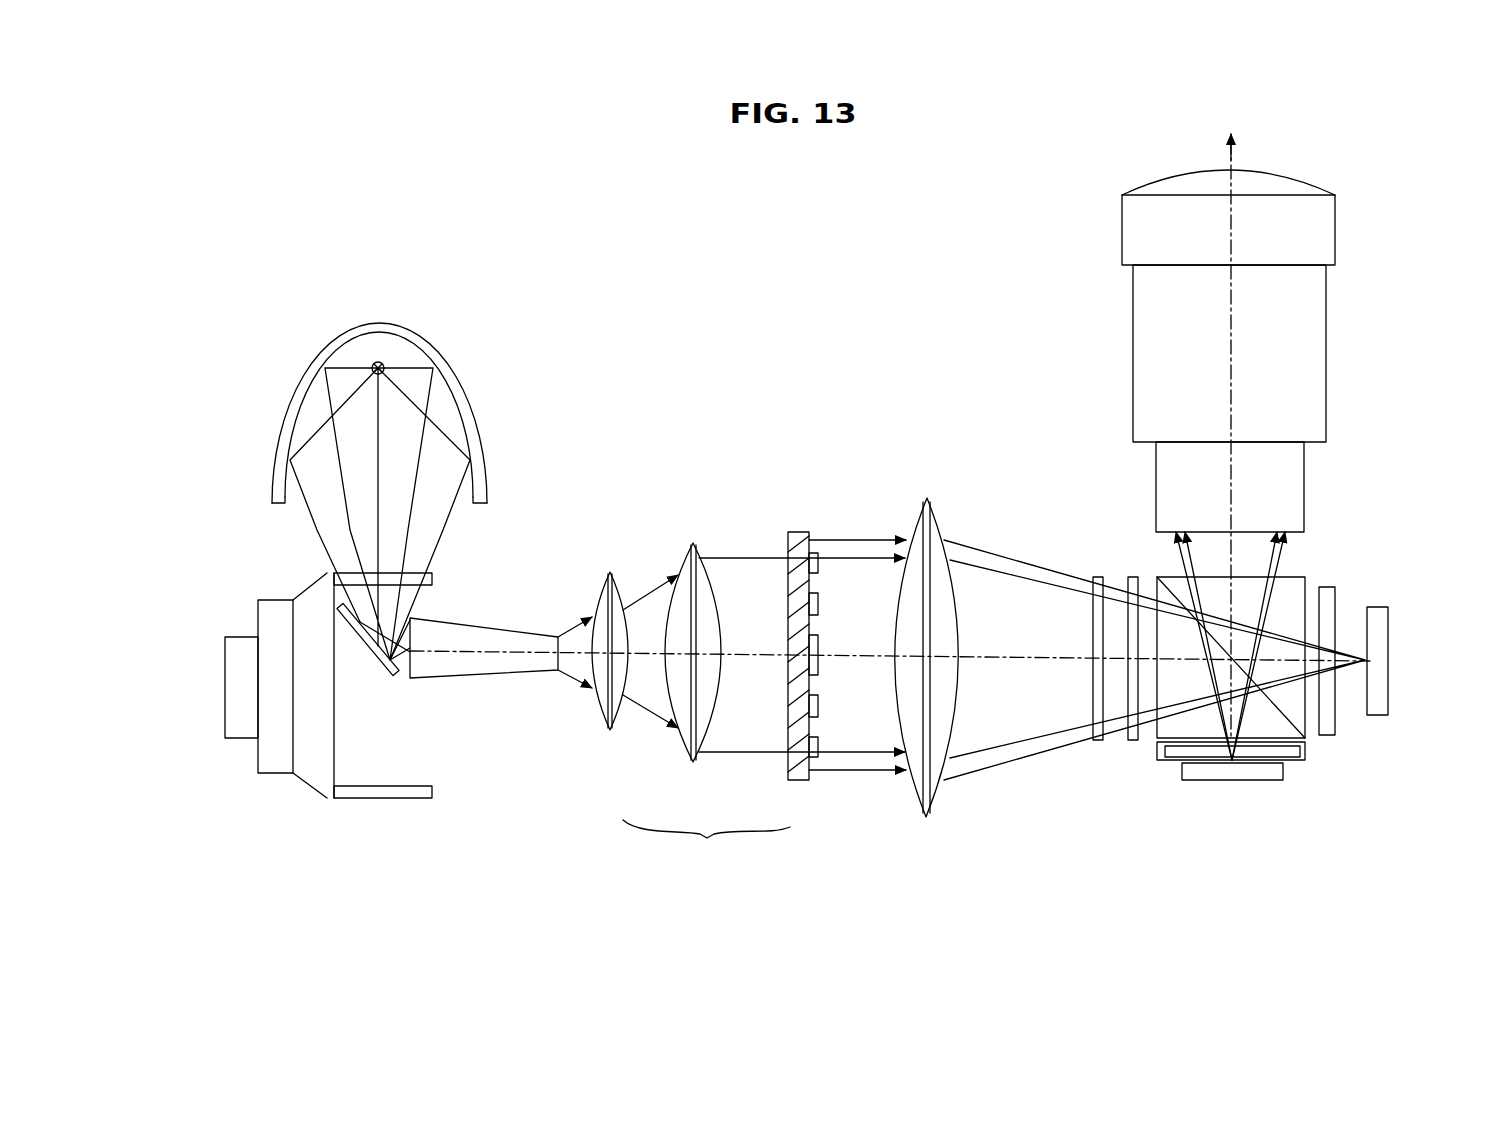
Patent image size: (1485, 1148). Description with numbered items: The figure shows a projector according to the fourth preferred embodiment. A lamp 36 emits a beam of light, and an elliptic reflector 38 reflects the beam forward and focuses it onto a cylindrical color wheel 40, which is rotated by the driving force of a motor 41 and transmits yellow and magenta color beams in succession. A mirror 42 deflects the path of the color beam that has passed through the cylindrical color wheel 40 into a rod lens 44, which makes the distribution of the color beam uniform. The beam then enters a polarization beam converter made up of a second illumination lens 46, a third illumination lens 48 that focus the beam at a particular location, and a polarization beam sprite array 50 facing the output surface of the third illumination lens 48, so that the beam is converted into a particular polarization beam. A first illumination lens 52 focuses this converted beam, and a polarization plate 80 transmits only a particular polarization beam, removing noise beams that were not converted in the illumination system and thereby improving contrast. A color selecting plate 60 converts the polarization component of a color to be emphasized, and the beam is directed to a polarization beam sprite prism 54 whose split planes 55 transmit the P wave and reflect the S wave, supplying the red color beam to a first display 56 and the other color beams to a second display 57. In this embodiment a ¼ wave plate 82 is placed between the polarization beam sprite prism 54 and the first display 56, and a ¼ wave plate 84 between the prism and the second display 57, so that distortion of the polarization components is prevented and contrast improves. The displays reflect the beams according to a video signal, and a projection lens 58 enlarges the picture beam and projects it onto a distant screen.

The lamp 36 is at (378, 362).
The elliptic reflector 38 is at (457, 387).
The cylindrical color wheel 40 is at (268, 613).
The motor 41 is at (235, 738).
The mirror 42 is at (395, 678).
The rod lens 44 is at (493, 673).
The second illumination lens 46 is at (610, 730).
The third illumination lens 48 is at (693, 762).
The polarization beam sprite array 50 is at (797, 780).
The first illumination lens 52 is at (926, 817).
The polarization beam sprite prism 54 is at (1167, 753).
The split planes 55 is at (1305, 747).
The first display 56 is at (1380, 620).
The second display 57 is at (1243, 773).
The projection lens 58 is at (1313, 353).
The color selecting plate 60 is at (1133, 740).
The polarization plate 80 is at (1097, 740).
The ¼ wave plate 82 is at (1332, 588).
The ¼ wave plate 84 is at (1288, 752).